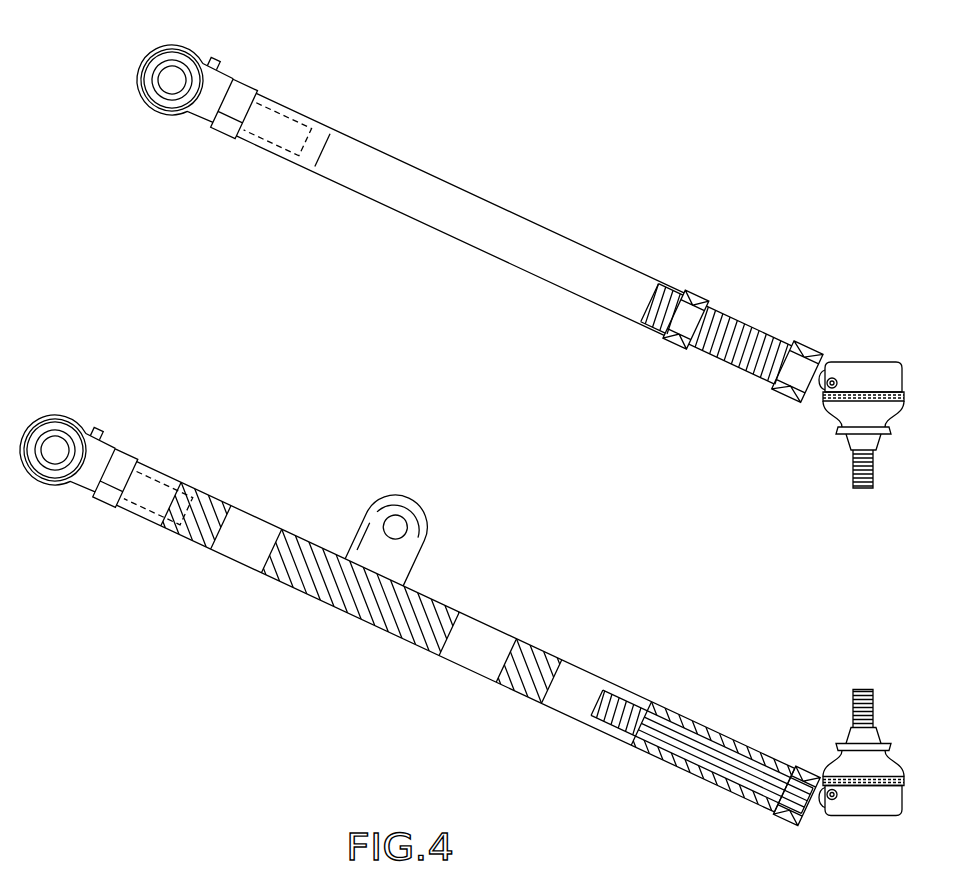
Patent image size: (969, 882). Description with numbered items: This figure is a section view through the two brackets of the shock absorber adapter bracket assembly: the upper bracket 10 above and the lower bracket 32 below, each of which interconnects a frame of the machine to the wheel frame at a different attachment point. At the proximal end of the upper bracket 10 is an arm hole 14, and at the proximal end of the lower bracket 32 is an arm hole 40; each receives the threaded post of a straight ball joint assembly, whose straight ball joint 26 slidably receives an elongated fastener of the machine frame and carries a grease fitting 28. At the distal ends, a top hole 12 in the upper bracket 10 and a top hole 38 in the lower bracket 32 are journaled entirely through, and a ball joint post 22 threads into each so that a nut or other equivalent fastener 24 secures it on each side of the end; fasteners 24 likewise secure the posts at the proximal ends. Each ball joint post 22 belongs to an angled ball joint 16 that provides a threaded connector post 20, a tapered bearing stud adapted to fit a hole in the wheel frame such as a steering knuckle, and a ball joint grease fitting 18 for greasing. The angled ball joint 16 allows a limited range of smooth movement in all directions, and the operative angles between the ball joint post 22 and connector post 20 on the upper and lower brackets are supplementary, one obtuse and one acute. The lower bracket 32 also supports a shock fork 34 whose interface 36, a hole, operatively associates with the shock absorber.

The upper bracket 10 is at (450, 187).
The top hole 12 is at (731, 367).
The arm hole 14 is at (278, 160).
The angled ball joint 16 is at (858, 365).
The ball joint grease fitting 18 is at (838, 378).
The threaded connector post 20 is at (853, 470).
The ball joint post 22 is at (727, 322).
The nut or other equivalent fastener 24 is at (243, 85).
The straight ball joint 26 is at (166, 115).
The grease fitting 28 is at (216, 58).
The lower bracket 32 is at (353, 613).
The shock fork 34 is at (402, 498).
The interface 36 is at (407, 532).
The top hole 38 is at (700, 757).
The arm hole 40 is at (167, 460).